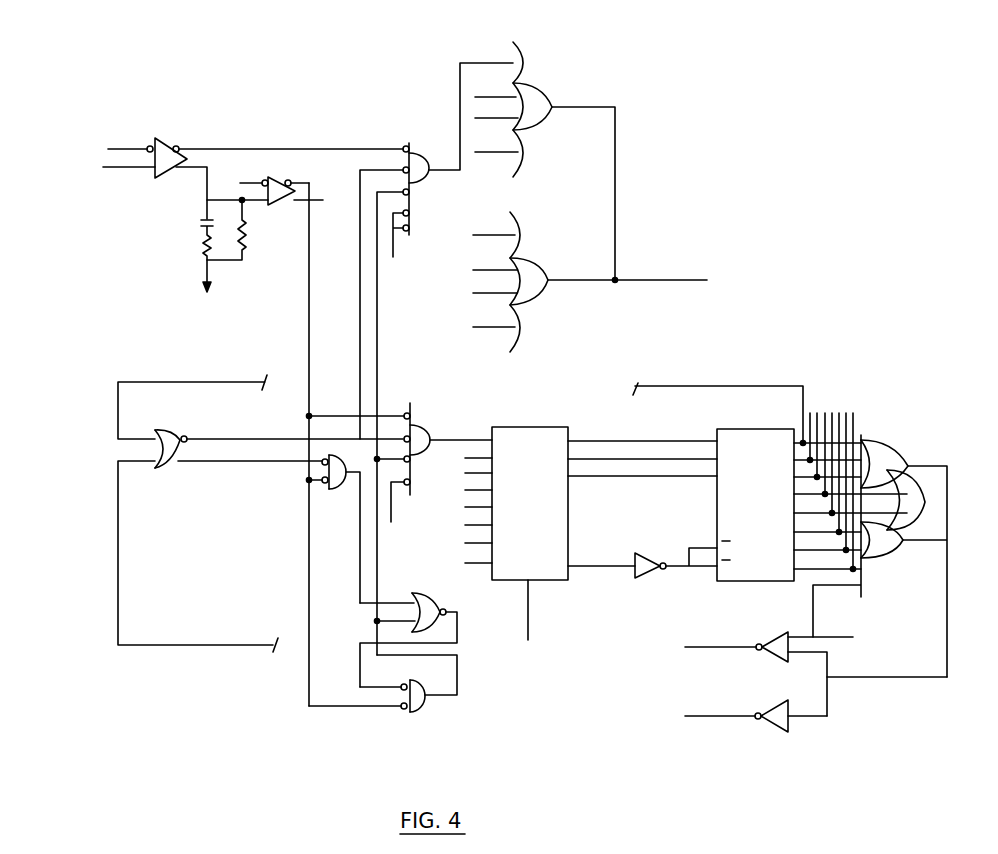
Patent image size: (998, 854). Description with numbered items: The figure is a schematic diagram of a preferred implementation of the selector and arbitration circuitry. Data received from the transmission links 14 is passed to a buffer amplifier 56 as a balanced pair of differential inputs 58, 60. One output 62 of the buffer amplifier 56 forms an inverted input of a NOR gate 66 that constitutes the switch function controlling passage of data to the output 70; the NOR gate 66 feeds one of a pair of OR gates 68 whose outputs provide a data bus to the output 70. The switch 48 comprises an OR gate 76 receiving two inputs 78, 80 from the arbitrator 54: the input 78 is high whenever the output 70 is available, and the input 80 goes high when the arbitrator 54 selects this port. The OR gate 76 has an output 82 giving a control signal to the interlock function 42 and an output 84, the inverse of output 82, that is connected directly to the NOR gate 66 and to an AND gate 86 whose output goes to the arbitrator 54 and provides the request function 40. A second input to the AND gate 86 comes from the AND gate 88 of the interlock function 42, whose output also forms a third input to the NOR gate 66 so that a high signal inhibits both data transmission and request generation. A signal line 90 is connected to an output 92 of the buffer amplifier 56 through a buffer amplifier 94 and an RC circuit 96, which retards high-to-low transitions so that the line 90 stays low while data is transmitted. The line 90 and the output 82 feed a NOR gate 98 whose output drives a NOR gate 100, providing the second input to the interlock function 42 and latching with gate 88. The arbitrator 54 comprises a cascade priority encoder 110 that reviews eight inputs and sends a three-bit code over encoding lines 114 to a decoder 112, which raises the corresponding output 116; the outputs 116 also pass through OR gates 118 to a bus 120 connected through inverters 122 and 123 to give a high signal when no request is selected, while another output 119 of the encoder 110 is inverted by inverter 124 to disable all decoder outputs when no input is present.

The transmission links 14 is at (471, 117).
The request function 40 is at (391, 399).
The interlock function 42 is at (463, 668).
The switch 48 is at (143, 479).
The arbitrator 54 is at (565, 409).
The buffer amplifier 56 is at (163, 148).
The differential input 58 is at (106, 149).
The differential input 60 is at (118, 165).
The output of amplifier 62 is at (305, 148).
The NOR gate 66 is at (428, 165).
The OR gates 68 is at (537, 113).
The output 70 is at (676, 280).
The OR gate 76 is at (170, 462).
The input 78 is at (118, 523).
The input 80 is at (140, 381).
The output 82 is at (258, 463).
The output 84 is at (231, 438).
The AND gate 86 is at (421, 433).
The AND gate 88 is at (420, 708).
The signal line 90 is at (307, 352).
The output of buffer amplifier 92 is at (171, 177).
The buffer amplifier 94 is at (280, 208).
The RC circuit 96 is at (192, 241).
The NOR gate 98 is at (327, 488).
The NOR gate 100 is at (447, 611).
The encoder 110 is at (562, 512).
The decoder 112 is at (717, 505).
The encoding lines 114 is at (650, 438).
The outputs 116 is at (807, 583).
The OR gates 118 is at (917, 492).
The output 119 is at (590, 568).
The bus 120 is at (888, 678).
The inverter 122 is at (777, 702).
The inverter 123 is at (777, 638).
The inverter 124 is at (641, 573).